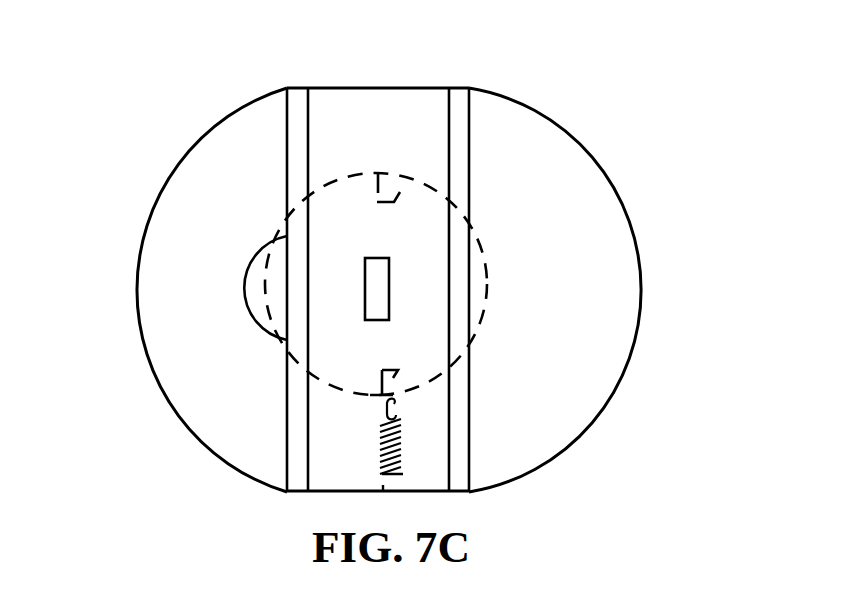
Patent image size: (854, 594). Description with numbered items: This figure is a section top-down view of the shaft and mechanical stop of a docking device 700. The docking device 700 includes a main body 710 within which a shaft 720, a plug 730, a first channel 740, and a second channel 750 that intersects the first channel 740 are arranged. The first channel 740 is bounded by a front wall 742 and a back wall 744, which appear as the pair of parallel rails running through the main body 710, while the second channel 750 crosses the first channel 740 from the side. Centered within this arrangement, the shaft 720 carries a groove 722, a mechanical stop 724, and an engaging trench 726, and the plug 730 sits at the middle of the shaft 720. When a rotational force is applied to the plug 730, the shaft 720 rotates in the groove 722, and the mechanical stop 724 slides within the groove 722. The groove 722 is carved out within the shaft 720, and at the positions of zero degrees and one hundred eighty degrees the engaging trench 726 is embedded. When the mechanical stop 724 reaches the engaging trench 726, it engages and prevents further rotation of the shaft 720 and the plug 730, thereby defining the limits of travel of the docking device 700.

The docking device 700 is at (128, 308).
The main body 710 is at (520, 190).
The shaft 720 is at (397, 360).
The groove 722 is at (427, 382).
The mechanical stop 724 is at (405, 442).
The engaging trench 726 is at (393, 191).
The plug 730 is at (389, 318).
The first channel 740 is at (366, 143).
The front wall 742 is at (294, 110).
The back wall 744 is at (459, 103).
The second channel 750 is at (247, 298).